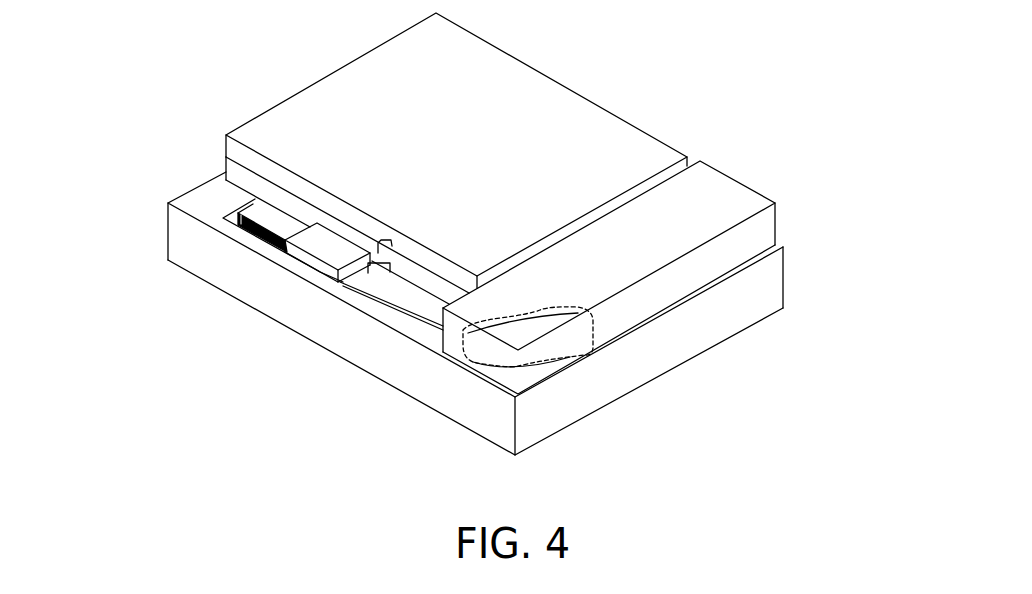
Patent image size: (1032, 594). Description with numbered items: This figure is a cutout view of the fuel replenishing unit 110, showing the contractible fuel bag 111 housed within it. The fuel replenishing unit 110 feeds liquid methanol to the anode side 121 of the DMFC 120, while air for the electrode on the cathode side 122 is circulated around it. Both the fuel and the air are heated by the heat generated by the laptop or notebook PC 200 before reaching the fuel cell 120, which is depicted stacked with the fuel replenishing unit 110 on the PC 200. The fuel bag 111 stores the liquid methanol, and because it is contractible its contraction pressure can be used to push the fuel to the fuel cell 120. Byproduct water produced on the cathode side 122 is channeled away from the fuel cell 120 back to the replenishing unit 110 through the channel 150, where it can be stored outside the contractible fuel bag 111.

The DMFC 120 is at (586, 91).
The cathode side 122 is at (286, 172).
The anode side 121 is at (233, 173).
The fuel replenishing unit 110 is at (716, 202).
The fuel bag 111 is at (537, 337).
The channel 150 is at (319, 308).
The laptop or notebook PC 200 is at (740, 311).